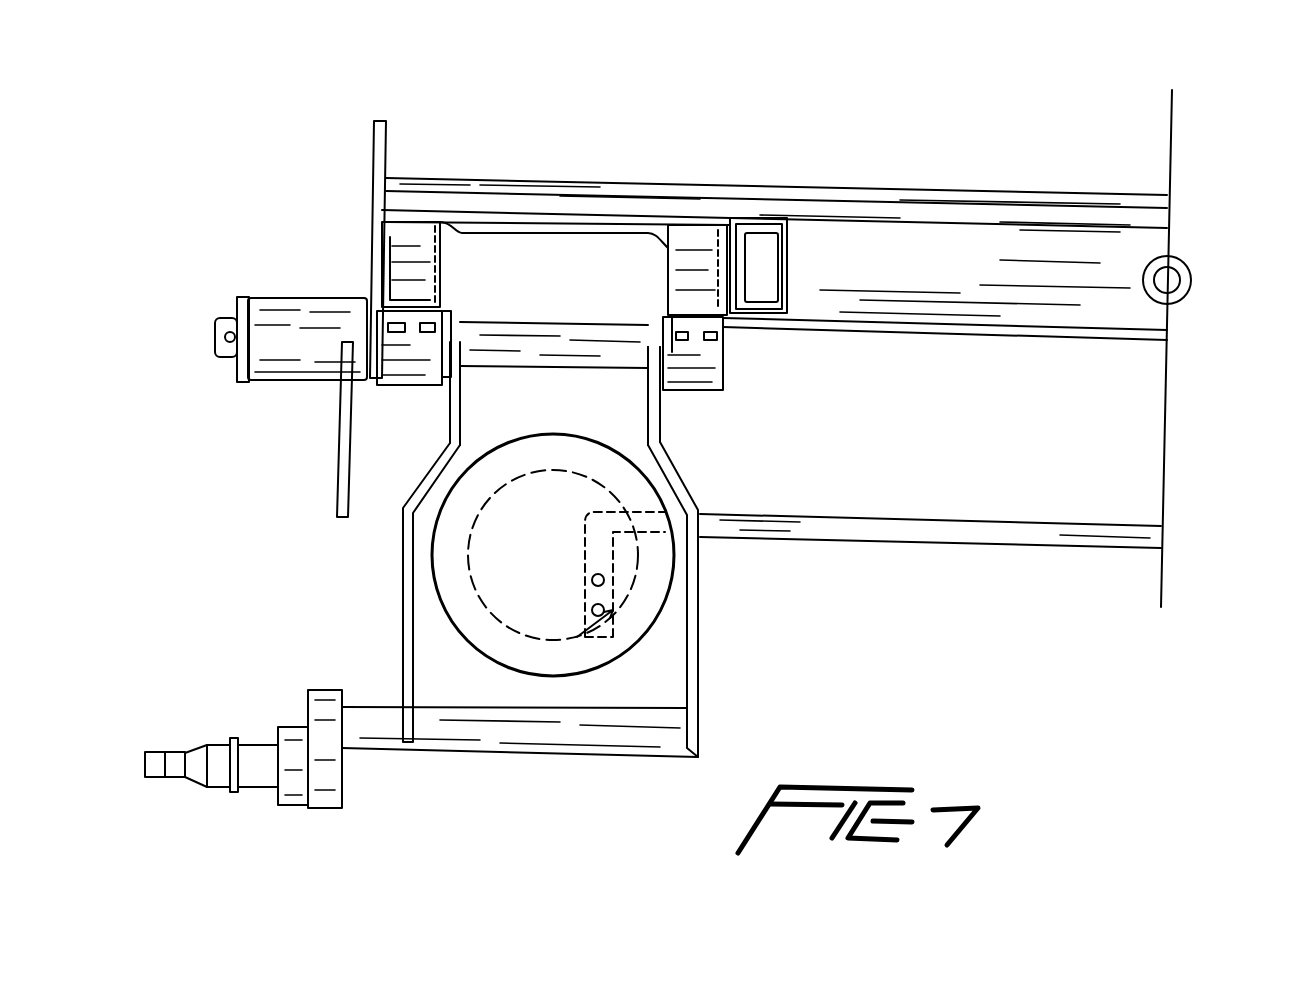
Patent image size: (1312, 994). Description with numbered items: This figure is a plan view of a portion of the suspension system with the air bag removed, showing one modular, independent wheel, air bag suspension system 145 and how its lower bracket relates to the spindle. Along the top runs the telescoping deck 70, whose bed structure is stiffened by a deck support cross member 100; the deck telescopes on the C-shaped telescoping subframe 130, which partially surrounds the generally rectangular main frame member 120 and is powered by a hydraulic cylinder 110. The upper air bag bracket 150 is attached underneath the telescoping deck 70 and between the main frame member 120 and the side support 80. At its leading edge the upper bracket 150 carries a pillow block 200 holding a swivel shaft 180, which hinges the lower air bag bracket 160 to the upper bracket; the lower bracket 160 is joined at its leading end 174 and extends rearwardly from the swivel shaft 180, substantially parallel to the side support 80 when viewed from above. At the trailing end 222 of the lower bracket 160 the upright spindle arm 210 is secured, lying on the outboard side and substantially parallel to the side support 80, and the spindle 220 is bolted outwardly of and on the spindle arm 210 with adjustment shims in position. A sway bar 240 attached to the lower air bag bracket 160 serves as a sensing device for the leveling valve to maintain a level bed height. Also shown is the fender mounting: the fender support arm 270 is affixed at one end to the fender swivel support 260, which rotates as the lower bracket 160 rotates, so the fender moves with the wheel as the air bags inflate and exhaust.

The telescoping deck 70 is at (992, 192).
The side support 80 is at (388, 138).
The deck support cross member 100 is at (1022, 215).
The hydraulic cylinder 110 is at (1182, 290).
The main frame member 120 is at (768, 282).
The telescoping subframe 130 is at (770, 218).
The modular, independent wheel, air bag suspension system 145 is at (733, 603).
The upper air bag bracket 150 is at (436, 242).
The lower air bag bracket 160 is at (408, 620).
The leading end of lower bracket 174 is at (447, 387).
The swivel shaft 180 is at (232, 312).
The pillow block 200 is at (693, 390).
The spindle arm 210 is at (342, 775).
The spindle 220 is at (247, 745).
The trailing end of lower bracket 222 is at (430, 690).
The sway bar 240 is at (780, 514).
The fender swivel support 260 is at (308, 298).
The fender support arm 270 is at (337, 460).